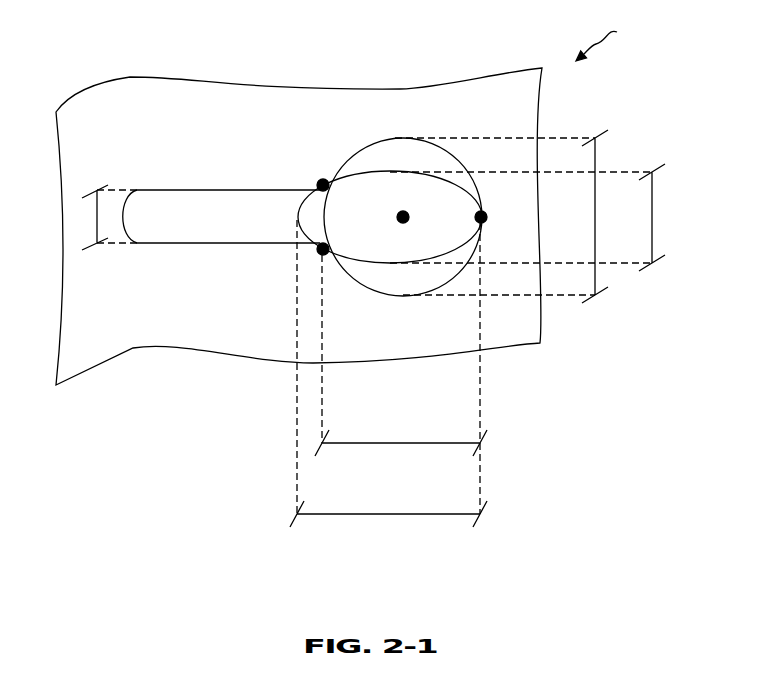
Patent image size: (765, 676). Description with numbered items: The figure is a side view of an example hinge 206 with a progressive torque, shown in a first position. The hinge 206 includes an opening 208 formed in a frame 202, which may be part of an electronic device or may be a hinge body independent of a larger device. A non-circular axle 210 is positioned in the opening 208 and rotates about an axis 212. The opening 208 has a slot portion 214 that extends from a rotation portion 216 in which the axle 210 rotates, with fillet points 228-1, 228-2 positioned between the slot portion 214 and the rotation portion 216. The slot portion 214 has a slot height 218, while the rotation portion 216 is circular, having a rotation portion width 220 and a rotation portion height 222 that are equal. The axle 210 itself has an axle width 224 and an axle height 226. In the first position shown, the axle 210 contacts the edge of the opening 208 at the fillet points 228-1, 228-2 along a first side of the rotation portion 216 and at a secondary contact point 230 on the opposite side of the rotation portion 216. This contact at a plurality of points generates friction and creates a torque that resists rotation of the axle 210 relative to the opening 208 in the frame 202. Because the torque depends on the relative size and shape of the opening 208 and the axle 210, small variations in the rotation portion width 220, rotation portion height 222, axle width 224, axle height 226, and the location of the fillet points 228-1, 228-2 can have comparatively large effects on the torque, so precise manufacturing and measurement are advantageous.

The frame 202 is at (180, 100).
The hinge 206 is at (617, 37).
The opening 208 is at (245, 190).
The non-circular axle 210 is at (395, 174).
The axis 212 is at (404, 212).
The slot portion 214 is at (196, 224).
The rotation portion 216 is at (360, 284).
The slot height 218 is at (97, 226).
The rotation portion width 220 is at (390, 443).
The rotation portion height 222 is at (598, 214).
The axle width 224 is at (377, 514).
The axle height 226 is at (655, 205).
The fillet point 228-1 is at (323, 184).
The fillet point 228-2 is at (323, 250).
The secondary contact point 230 is at (482, 218).